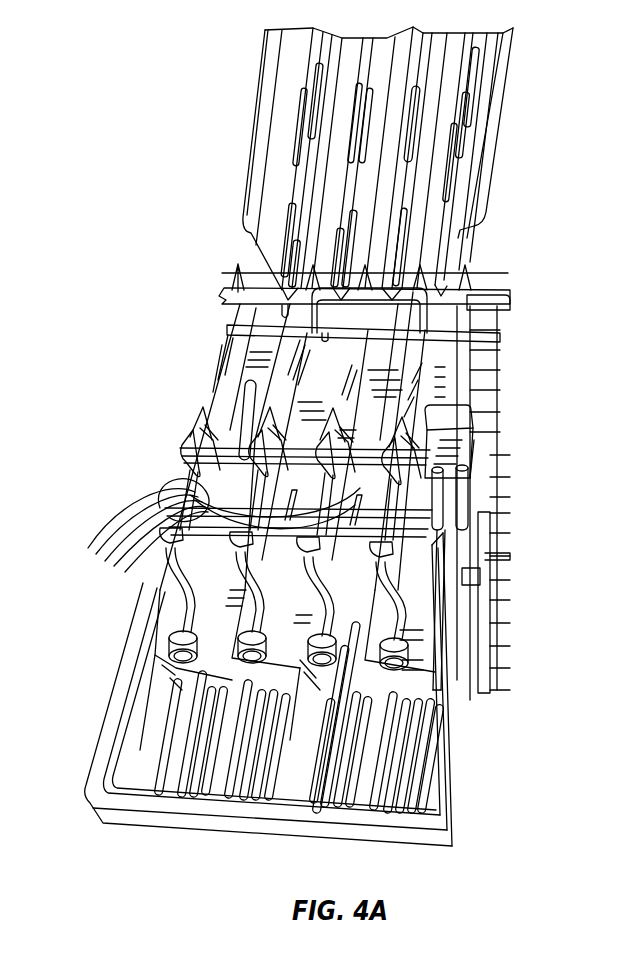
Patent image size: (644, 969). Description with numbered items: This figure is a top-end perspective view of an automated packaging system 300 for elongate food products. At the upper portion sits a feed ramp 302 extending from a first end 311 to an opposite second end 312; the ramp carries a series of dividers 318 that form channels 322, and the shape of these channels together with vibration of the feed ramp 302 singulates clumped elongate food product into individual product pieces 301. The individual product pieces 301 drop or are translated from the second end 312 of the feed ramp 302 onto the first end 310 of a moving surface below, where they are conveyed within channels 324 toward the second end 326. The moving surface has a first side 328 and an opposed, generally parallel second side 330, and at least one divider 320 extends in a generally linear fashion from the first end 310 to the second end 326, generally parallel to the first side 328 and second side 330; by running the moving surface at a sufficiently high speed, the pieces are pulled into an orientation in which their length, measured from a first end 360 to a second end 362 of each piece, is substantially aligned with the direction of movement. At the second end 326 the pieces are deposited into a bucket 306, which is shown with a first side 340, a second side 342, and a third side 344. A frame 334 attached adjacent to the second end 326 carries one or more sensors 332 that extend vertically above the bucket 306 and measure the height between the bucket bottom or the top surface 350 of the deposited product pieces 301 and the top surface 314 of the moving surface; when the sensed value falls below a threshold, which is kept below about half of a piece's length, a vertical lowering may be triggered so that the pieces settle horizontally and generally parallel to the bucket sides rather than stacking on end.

The automated packaging system 300 is at (133, 120).
The individual product pieces 301 is at (313, 118).
The feed ramp 302 is at (248, 220).
The bucket 306 is at (440, 720).
The first end of moving surface 310 is at (463, 313).
The first end of feed ramp 311 is at (487, 43).
The second end of feed ramp 312 is at (440, 258).
The top surface of moving surface 314 is at (275, 353).
The dividers 318 is at (318, 190).
The divider 320 is at (432, 402).
The channels 322 is at (447, 233).
The channels 324 is at (472, 357).
The second end of moving surface 326 is at (425, 637).
The first side of moving surface 328 is at (217, 383).
The second side of moving surface 330 is at (467, 327).
The sensors 332 is at (403, 653).
The frame 334 is at (485, 550).
The first side of bucket 340 is at (117, 722).
The second side of bucket 342 is at (442, 740).
The third side of bucket 344 is at (182, 808).
The top surface of deposited product pieces 350 is at (400, 757).
The first end of individual product piece 360 is at (472, 90).
The second end of individual product piece 362 is at (460, 155).